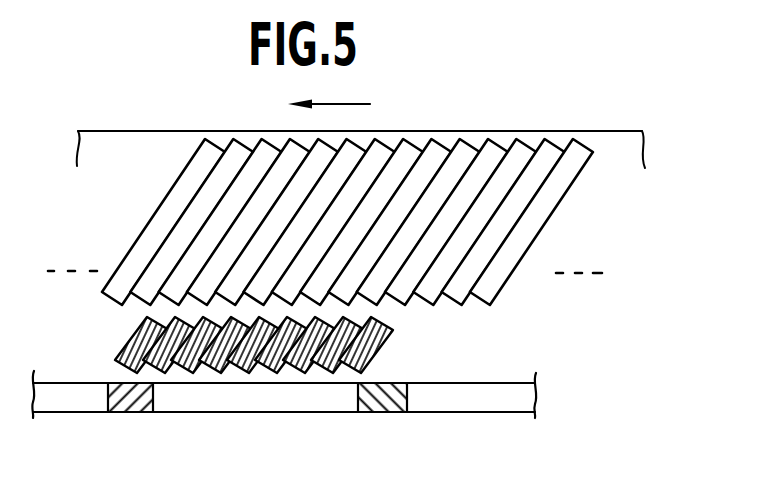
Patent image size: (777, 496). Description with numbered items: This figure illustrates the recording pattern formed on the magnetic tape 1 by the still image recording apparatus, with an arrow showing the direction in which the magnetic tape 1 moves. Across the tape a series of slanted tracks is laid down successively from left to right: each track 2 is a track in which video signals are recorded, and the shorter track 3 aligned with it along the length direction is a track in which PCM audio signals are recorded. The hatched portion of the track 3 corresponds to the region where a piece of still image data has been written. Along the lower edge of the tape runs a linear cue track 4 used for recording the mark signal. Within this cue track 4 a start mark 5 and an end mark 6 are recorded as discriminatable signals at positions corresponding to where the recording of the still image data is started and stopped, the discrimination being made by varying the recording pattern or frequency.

The magnetic tape 1 is at (123, 142).
The track 2 is at (544, 211).
The track 3 is at (372, 350).
The linear track 4 is at (78, 402).
The start mark 5 is at (131, 409).
The end mark 6 is at (380, 403).